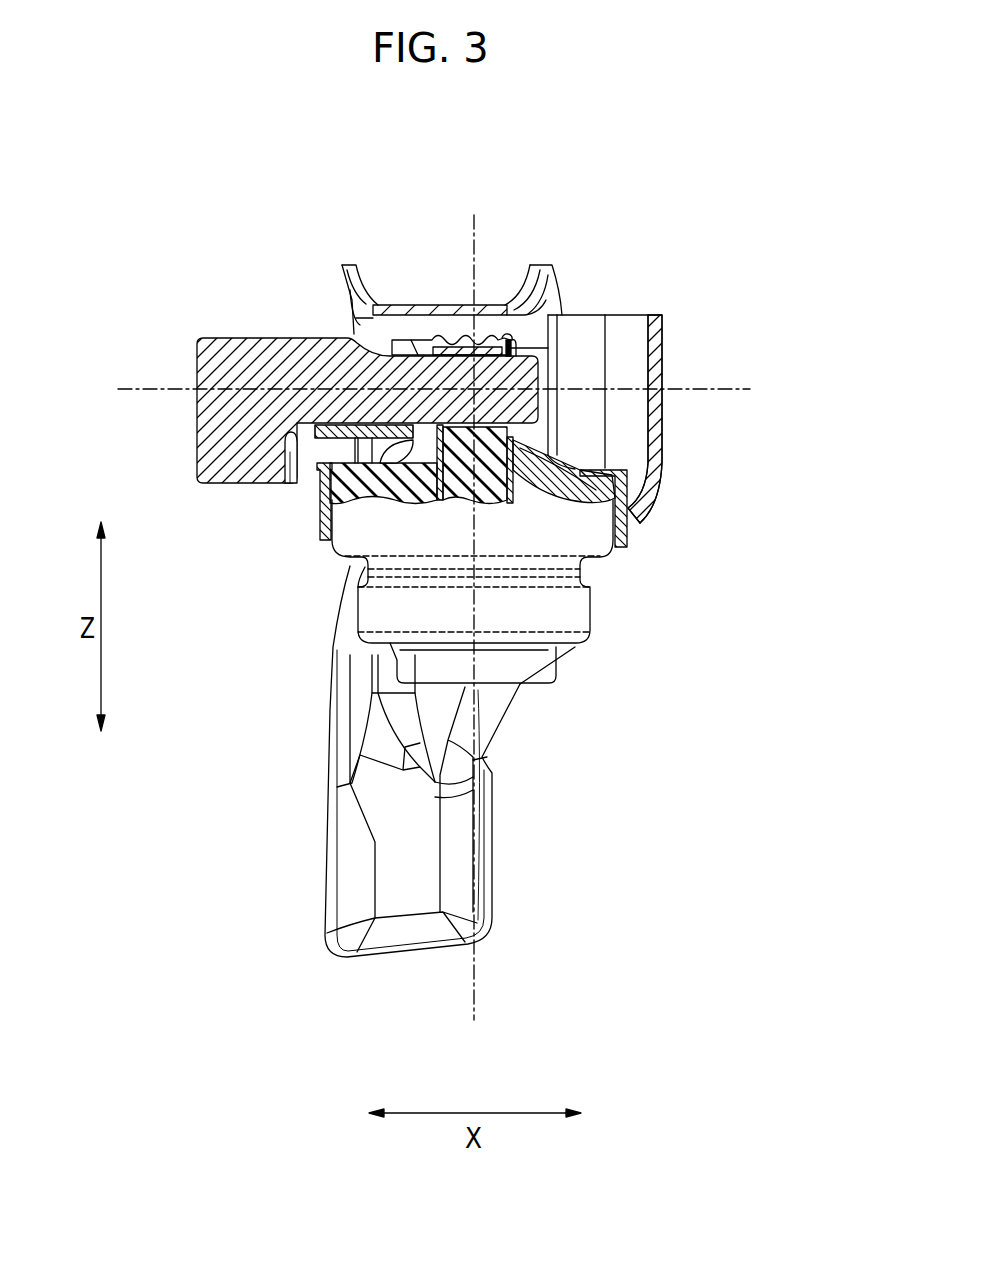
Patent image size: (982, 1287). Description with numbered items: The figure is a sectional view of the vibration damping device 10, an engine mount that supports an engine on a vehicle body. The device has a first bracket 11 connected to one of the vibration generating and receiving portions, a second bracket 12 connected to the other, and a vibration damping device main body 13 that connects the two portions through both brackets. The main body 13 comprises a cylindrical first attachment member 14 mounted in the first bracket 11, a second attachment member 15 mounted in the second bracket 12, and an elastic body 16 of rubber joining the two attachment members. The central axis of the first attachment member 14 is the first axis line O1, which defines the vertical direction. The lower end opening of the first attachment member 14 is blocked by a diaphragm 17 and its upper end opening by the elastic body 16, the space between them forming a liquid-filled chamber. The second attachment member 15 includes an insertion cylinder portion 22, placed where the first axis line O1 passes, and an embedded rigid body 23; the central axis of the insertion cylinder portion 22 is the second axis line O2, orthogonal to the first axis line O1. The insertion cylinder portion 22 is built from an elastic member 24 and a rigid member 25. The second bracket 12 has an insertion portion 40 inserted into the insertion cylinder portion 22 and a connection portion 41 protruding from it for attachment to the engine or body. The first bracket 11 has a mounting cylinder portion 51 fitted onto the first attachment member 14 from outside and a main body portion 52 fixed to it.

The vibration damping device 10 is at (181, 212).
The first bracket 11 is at (217, 553).
The second bracket 12 is at (447, 218).
The vibration damping device main body 13 is at (767, 452).
The first attachment member 14 is at (605, 553).
The second attachment member 15 is at (718, 423).
The elastic body 16 is at (585, 497).
The diaphragm 17 is at (558, 672).
The insertion cylinder portion 22 is at (557, 425).
The embedded rigid body 23 is at (514, 466).
The elastic member 24 is at (493, 330).
The rigid member 25 is at (505, 322).
The insertion portion 40 is at (428, 367).
The connection portion 41 is at (330, 352).
The mounting cylinder portion 51 is at (321, 538).
The main body portion 52 is at (331, 666).
The first axis line O1 is at (474, 236).
The second axis line O2 is at (707, 385).